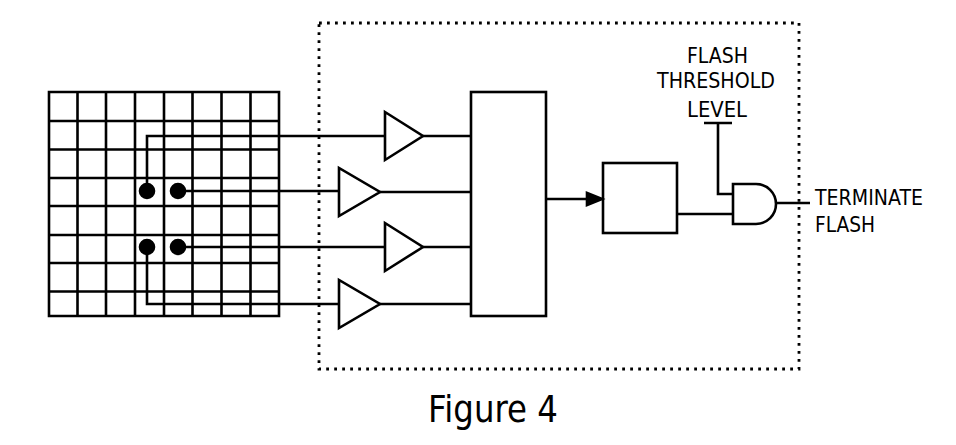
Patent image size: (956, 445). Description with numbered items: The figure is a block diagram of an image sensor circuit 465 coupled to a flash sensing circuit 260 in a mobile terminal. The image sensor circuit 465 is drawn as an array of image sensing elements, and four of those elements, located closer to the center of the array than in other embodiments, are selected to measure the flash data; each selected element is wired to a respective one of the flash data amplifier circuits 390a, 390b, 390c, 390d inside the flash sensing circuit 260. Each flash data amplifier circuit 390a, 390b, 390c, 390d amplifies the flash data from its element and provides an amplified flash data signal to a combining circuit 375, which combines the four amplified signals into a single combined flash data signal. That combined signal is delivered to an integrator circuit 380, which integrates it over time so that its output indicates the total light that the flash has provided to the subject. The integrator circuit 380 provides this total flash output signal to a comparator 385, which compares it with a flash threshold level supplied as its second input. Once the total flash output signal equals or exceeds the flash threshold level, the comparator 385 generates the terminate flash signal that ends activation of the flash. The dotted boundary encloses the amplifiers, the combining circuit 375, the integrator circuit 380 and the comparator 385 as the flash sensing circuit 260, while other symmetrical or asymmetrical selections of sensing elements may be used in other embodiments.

The image sensor circuit 465 is at (150, 92).
The flash data amplifier circuit 390a is at (403, 115).
The flash data amplifier circuit 390b is at (367, 181).
The flash data amplifier circuit 390c is at (403, 227).
The flash data amplifier circuit 390d is at (367, 293).
The combining circuit 375 is at (525, 211).
The integrator circuit 380 is at (657, 211).
The comparator 385 is at (755, 225).
The flash sensing circuit 260 is at (799, 77).